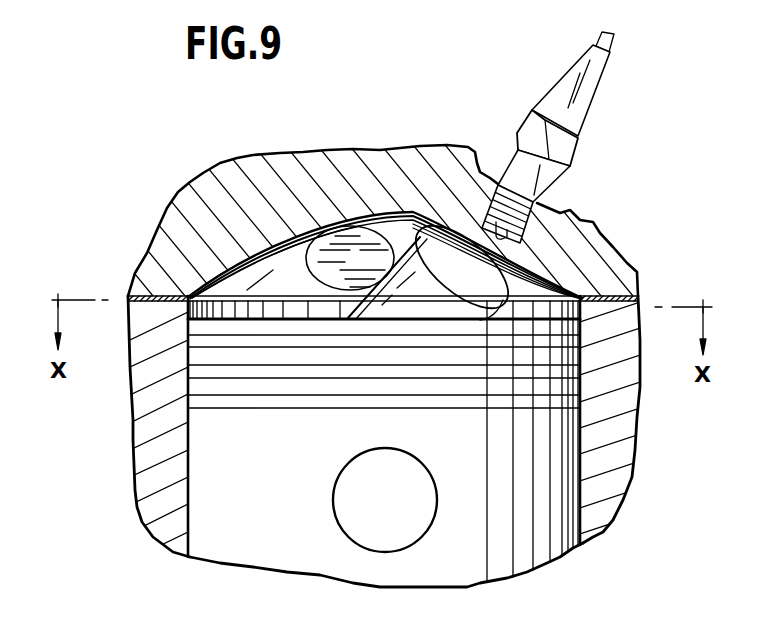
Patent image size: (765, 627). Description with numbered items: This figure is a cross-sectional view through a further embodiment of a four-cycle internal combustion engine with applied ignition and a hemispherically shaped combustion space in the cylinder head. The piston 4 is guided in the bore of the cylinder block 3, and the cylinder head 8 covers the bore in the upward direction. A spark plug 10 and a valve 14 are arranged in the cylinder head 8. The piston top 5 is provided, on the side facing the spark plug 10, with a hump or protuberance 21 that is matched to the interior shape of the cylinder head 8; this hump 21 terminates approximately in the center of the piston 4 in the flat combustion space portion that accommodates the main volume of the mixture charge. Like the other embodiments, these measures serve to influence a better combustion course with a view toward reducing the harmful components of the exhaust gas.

The cylinder block 3 is at (155, 503).
The piston 4 is at (248, 538).
The piston top 5 is at (337, 323).
The cylinder head 8 is at (290, 178).
The spark plug 10 is at (592, 96).
The valve 14 is at (328, 265).
The hump 21 is at (433, 295).